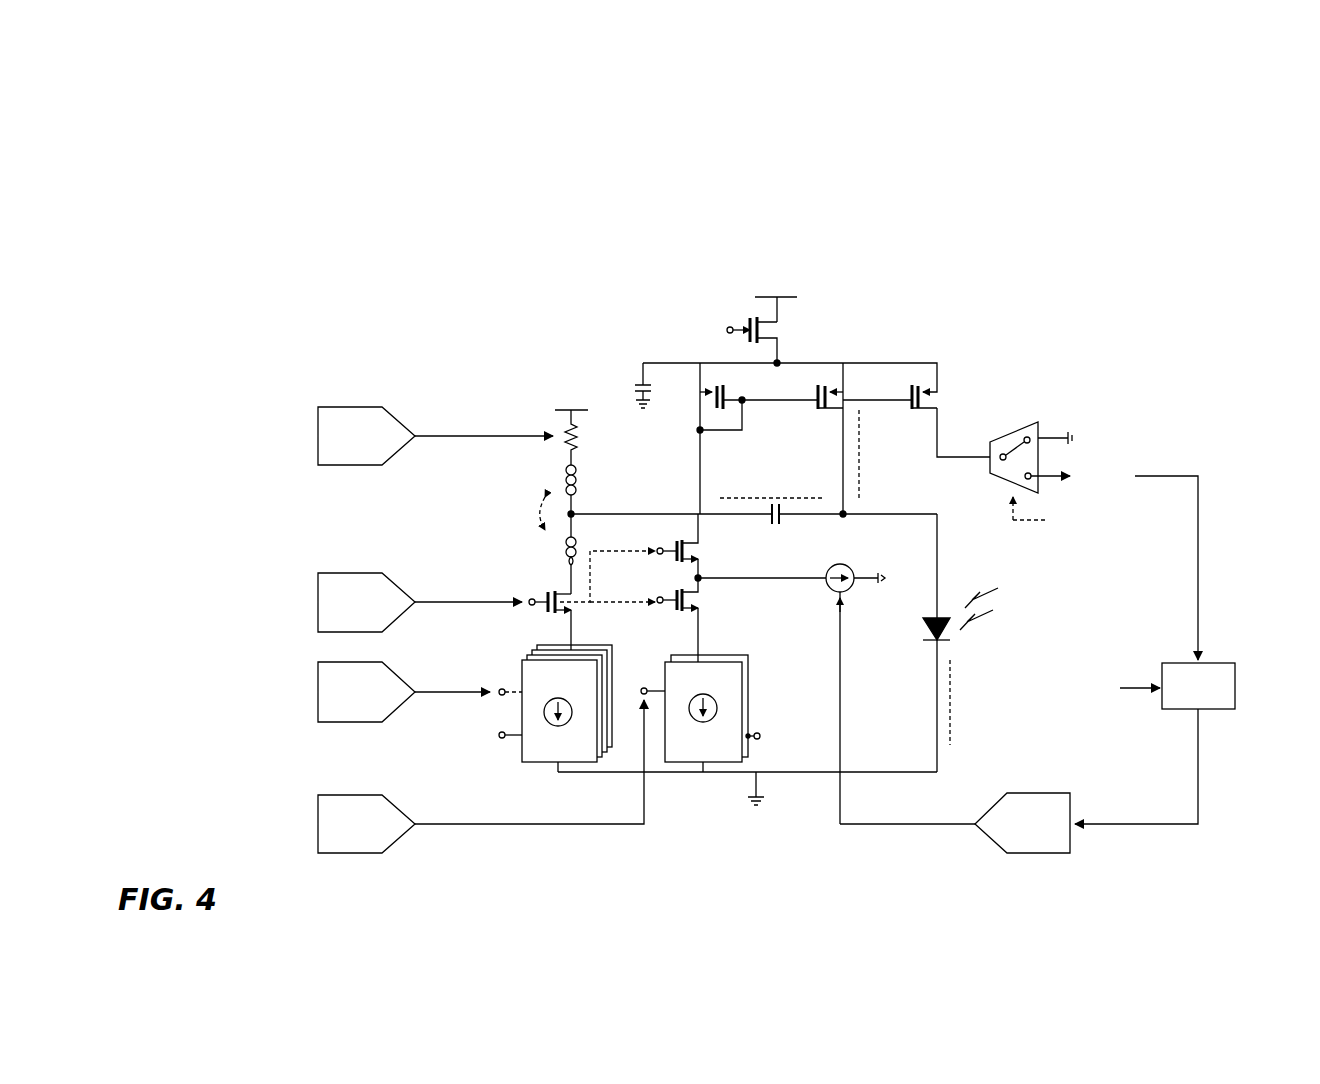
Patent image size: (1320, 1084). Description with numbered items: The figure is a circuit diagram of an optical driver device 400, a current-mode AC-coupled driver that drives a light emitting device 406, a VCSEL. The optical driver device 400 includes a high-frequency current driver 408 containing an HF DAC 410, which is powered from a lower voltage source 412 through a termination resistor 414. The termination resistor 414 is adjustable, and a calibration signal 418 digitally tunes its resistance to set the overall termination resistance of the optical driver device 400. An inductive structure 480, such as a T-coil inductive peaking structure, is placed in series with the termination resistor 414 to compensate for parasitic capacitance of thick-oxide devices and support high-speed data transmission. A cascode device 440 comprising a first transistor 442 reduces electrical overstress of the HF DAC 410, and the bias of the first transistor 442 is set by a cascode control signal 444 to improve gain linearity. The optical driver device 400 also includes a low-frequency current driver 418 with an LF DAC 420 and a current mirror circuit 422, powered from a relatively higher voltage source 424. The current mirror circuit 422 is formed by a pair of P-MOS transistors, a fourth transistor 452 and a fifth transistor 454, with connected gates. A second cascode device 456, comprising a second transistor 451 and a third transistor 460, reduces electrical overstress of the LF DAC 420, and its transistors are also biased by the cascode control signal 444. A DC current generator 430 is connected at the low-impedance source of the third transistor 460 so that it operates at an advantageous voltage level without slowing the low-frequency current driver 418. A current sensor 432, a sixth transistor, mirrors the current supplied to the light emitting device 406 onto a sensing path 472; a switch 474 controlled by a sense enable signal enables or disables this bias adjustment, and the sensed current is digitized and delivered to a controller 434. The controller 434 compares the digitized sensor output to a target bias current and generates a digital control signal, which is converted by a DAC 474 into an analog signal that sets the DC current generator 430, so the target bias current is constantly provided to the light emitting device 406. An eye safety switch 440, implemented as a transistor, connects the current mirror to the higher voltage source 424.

The optical driver device 400 is at (1213, 130).
The light emitting device 406 is at (942, 642).
The high-frequency current driver 408 is at (462, 340).
The HF DAC 410 is at (522, 708).
The voltage source VDDL 412 is at (570, 372).
The termination resistor 414 is at (566, 428).
The low-frequency current driver 418 is at (348, 407).
The LF DAC 420 is at (623, 738).
The current mirror circuit 422 is at (782, 403).
The voltage source VDDH 424 is at (767, 260).
The DC current generator 430 is at (843, 598).
The current sensor 432 is at (925, 390).
The controller 434 is at (1222, 709).
The cascode device 440 is at (495, 572).
The transistor M1 442 is at (548, 612).
The cascode control signal 444 is at (340, 573).
The transistor M2 451 is at (668, 610).
The transistor M4 452 is at (716, 390).
The transistor M5 454 is at (822, 420).
The cascode device 456 is at (672, 498).
The transistor M3 460 is at (668, 556).
The sensing path 472 is at (980, 427).
The switch 474 is at (350, 722).
The inductive structure 480 is at (535, 490).